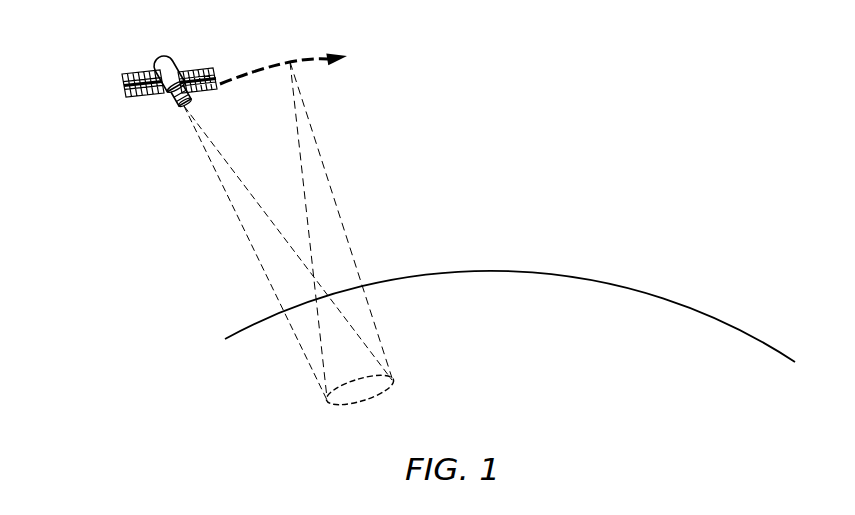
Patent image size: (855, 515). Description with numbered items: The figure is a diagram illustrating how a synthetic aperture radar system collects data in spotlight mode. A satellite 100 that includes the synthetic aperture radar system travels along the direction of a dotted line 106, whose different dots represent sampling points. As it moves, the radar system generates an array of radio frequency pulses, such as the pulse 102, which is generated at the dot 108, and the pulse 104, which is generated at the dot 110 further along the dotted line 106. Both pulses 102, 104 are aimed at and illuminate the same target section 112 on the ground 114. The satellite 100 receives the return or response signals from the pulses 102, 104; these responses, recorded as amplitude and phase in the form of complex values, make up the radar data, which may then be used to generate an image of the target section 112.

The satellite 100 is at (110, 105).
The pulse 102 is at (217, 173).
The pulse 104 is at (322, 162).
The dotted line 106 is at (343, 54).
The dot 108 is at (145, 72).
The dot 110 is at (288, 62).
The target section 112 is at (345, 408).
The ground 114 is at (532, 349).